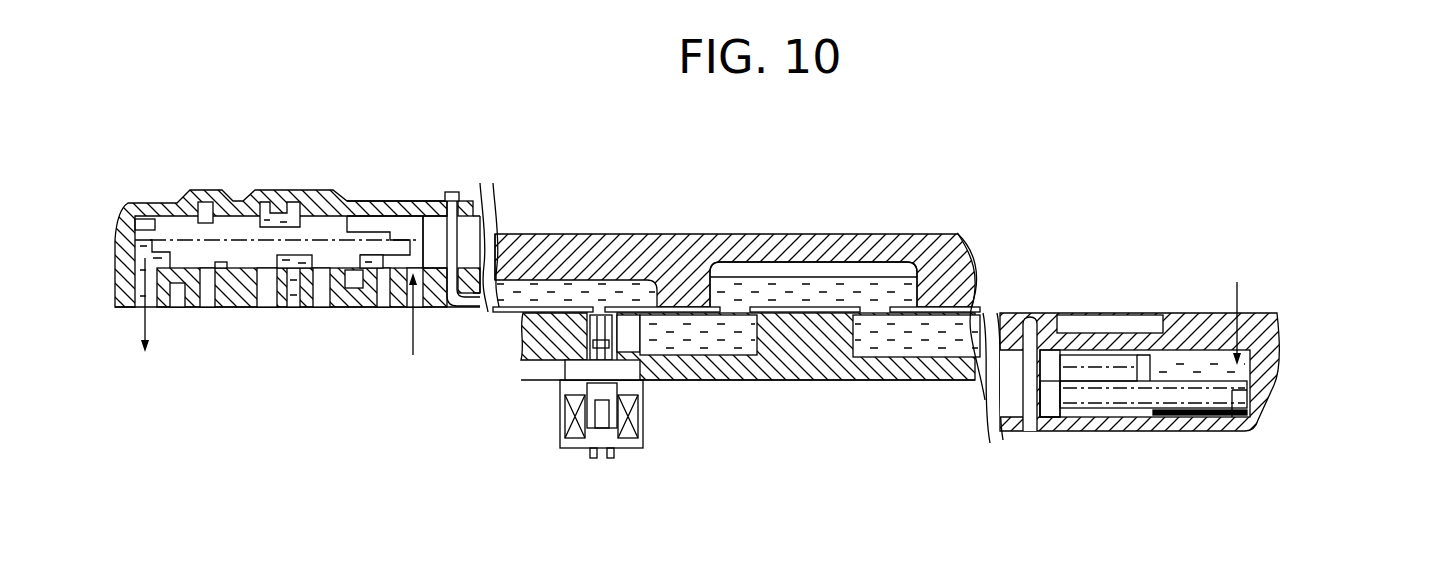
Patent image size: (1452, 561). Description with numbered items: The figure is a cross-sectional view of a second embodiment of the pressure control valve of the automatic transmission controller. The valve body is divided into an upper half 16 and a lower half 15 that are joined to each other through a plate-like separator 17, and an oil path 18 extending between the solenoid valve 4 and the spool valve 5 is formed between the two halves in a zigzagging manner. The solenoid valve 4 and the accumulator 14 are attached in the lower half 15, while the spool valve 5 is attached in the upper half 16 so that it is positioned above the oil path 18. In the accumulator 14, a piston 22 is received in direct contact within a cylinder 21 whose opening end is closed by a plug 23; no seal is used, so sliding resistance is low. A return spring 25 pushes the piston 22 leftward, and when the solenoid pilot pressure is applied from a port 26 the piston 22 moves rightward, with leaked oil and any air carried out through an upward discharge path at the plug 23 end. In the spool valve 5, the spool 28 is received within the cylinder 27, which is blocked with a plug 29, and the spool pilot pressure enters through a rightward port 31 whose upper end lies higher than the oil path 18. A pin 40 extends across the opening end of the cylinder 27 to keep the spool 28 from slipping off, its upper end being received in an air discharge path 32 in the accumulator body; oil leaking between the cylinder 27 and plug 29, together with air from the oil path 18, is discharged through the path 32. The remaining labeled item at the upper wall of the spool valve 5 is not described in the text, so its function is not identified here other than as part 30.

The solenoid valve 4 is at (573, 470).
The spool valve 5 is at (336, 230).
The accumulator 14 is at (1143, 398).
The lower half 15 is at (986, 321).
The upper half 16 is at (969, 244).
The plate-like separator 17 is at (973, 300).
The oil path 18 is at (737, 290).
The cylinder 21 is at (1140, 410).
The piston 22 is at (1142, 340).
The plug 23 is at (1052, 412).
The return spring 25 is at (1103, 408).
The port 26 is at (1217, 342).
The cylinder 27 is at (383, 268).
The spool 28 is at (323, 227).
The plug 29 is at (440, 231).
The cover plate 30 is at (403, 203).
The port 31 is at (421, 303).
The air discharge path 32 is at (447, 193).
The pin 40 is at (452, 195).